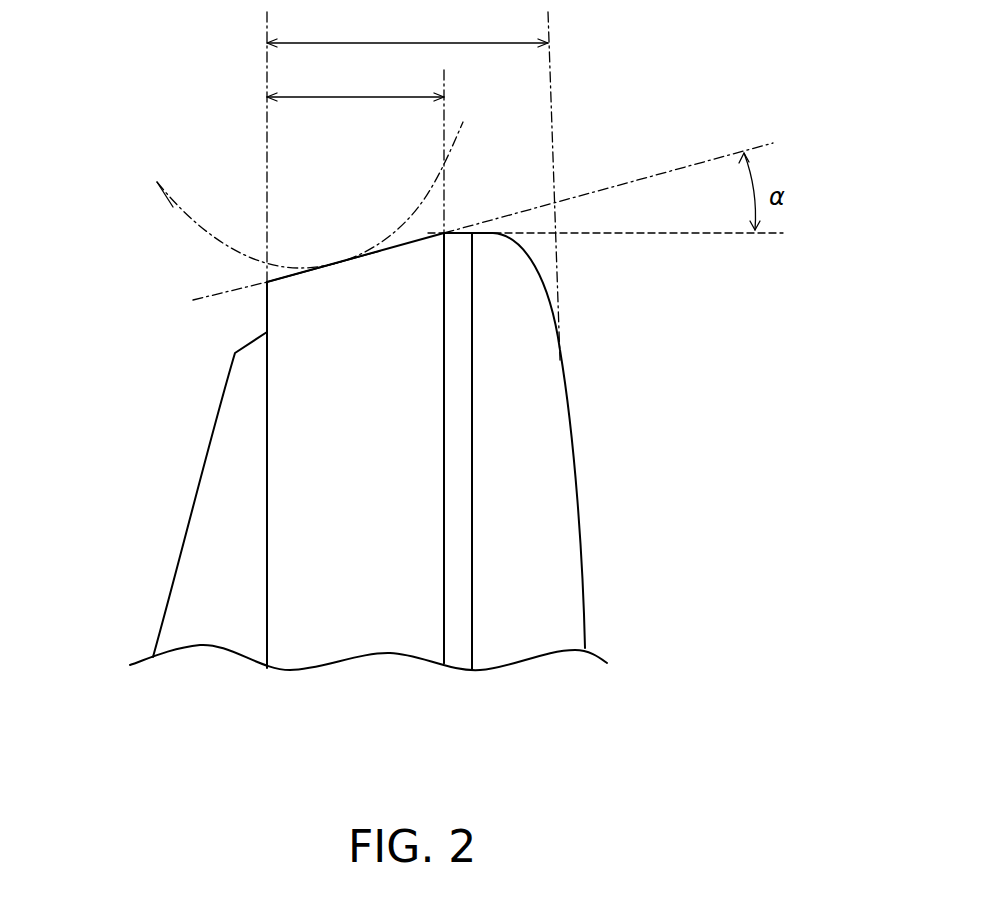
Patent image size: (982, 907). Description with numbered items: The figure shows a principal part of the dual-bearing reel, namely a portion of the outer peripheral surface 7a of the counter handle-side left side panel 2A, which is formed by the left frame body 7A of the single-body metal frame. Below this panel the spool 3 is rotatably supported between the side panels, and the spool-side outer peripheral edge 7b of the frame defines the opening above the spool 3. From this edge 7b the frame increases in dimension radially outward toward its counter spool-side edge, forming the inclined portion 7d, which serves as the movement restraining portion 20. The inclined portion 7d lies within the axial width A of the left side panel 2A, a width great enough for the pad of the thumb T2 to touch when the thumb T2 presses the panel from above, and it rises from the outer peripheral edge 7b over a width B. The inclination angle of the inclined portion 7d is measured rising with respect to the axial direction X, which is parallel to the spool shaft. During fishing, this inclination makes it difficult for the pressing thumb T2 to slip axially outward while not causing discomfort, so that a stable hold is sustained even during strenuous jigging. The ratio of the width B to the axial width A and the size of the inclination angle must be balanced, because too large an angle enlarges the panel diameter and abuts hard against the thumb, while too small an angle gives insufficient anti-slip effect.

The spool 3 is at (225, 505).
The movement restraining portion 20 is at (431, 225).
The left side panel 2A is at (422, 640).
The left frame body 7A is at (458, 451).
The outer peripheral surface 7a is at (357, 255).
The spool-side outer peripheral edge 7b is at (267, 282).
The inclined portion 7d is at (328, 263).
The thumb T2 is at (170, 202).
The axial width A is at (407, 29).
The width of the inclined portion B is at (355, 84).
The axial direction X is at (615, 237).